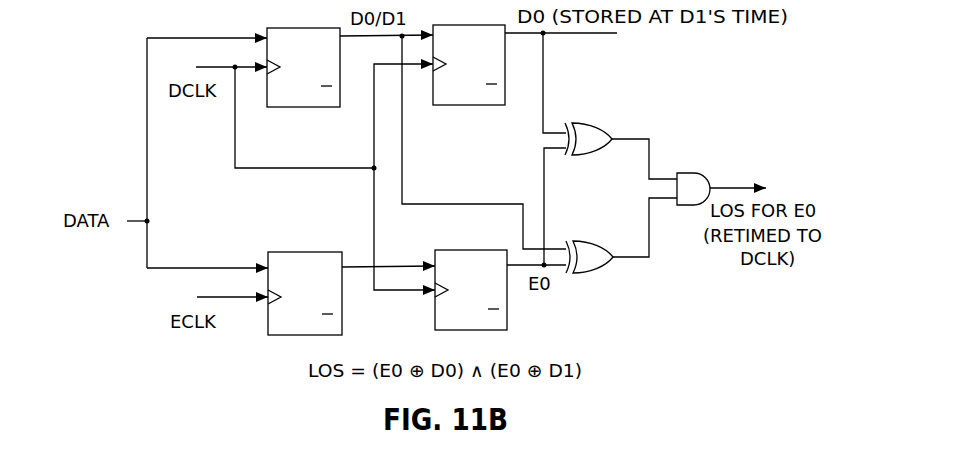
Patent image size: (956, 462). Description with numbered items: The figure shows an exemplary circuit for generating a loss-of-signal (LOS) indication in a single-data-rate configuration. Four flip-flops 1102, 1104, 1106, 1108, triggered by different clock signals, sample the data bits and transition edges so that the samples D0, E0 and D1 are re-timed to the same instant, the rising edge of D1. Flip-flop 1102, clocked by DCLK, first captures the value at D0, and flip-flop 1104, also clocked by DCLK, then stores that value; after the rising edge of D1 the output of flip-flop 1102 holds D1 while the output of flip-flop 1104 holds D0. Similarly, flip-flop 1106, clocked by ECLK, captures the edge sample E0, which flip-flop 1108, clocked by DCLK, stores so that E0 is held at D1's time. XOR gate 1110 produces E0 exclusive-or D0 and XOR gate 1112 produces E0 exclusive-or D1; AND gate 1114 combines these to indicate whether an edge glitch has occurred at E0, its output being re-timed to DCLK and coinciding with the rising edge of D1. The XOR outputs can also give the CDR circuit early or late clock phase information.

The flip-flop 1102 is at (332, 72).
The flip-flop 1104 is at (497, 68).
The flip-flop 1106 is at (334, 302).
The flip-flop 1108 is at (500, 298).
The XOR gate 1110 is at (592, 123).
The XOR gate 1112 is at (590, 239).
The AND gate 1114 is at (695, 172).